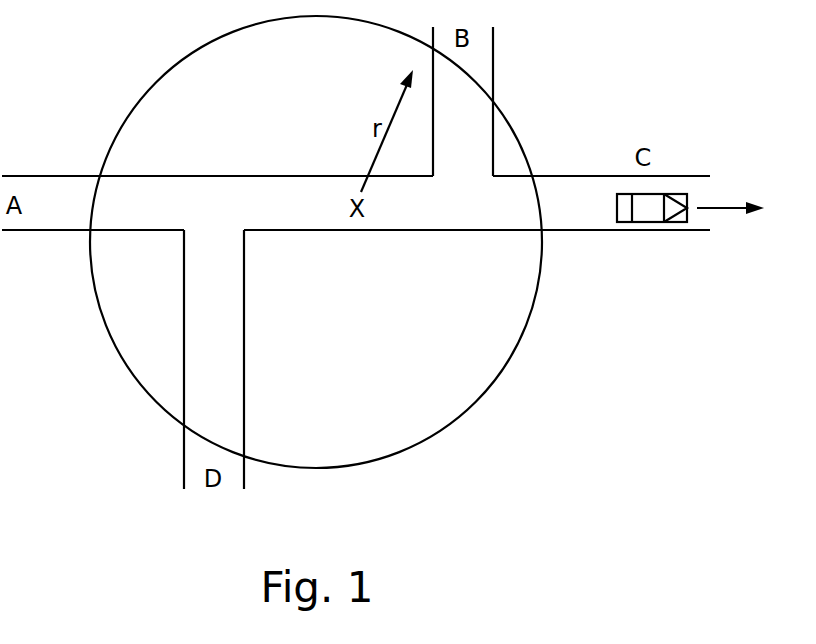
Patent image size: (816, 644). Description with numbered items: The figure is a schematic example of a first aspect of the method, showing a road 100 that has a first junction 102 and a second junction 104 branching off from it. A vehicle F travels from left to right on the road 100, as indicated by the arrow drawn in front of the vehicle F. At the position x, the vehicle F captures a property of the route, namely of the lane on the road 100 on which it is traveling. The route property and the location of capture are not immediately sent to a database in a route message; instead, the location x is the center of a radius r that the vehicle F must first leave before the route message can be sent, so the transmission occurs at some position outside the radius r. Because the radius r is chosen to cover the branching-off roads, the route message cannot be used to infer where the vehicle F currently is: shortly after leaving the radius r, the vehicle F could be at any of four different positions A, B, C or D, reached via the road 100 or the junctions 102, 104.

The road 100 is at (356, 203).
The first junction 102 is at (214, 359).
The second junction 104 is at (463, 101).
The vehicle F is at (645, 222).